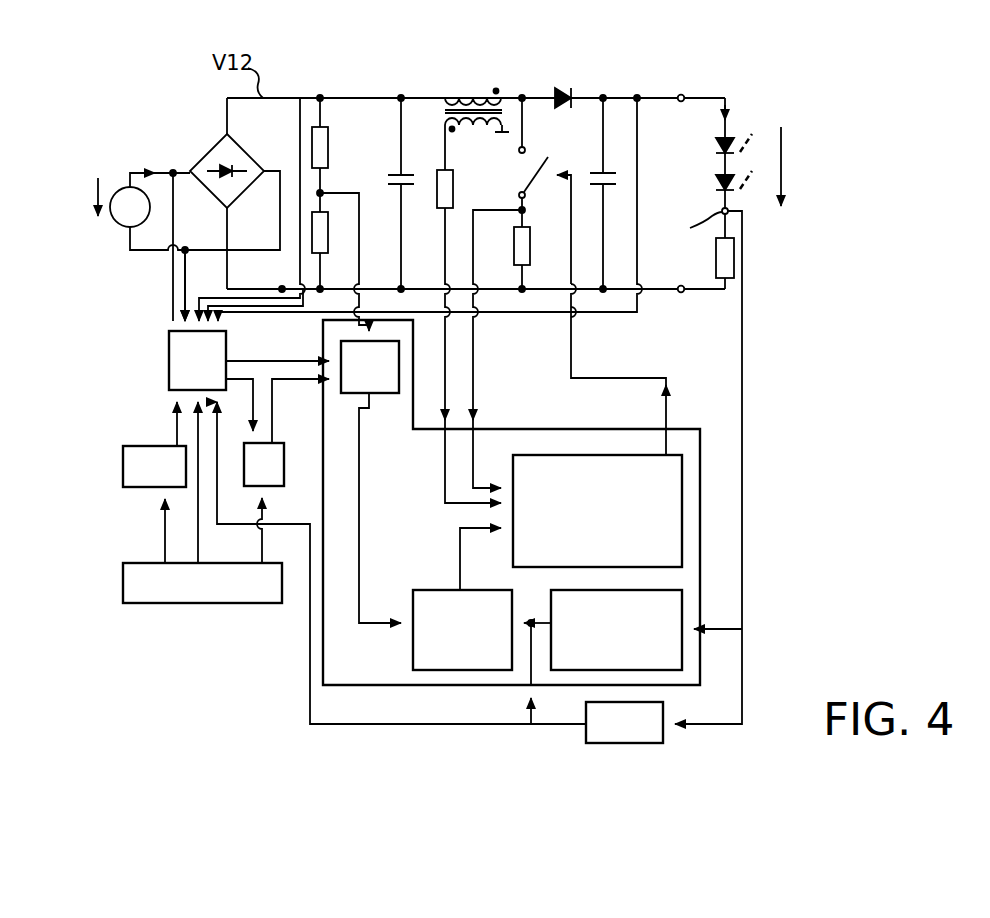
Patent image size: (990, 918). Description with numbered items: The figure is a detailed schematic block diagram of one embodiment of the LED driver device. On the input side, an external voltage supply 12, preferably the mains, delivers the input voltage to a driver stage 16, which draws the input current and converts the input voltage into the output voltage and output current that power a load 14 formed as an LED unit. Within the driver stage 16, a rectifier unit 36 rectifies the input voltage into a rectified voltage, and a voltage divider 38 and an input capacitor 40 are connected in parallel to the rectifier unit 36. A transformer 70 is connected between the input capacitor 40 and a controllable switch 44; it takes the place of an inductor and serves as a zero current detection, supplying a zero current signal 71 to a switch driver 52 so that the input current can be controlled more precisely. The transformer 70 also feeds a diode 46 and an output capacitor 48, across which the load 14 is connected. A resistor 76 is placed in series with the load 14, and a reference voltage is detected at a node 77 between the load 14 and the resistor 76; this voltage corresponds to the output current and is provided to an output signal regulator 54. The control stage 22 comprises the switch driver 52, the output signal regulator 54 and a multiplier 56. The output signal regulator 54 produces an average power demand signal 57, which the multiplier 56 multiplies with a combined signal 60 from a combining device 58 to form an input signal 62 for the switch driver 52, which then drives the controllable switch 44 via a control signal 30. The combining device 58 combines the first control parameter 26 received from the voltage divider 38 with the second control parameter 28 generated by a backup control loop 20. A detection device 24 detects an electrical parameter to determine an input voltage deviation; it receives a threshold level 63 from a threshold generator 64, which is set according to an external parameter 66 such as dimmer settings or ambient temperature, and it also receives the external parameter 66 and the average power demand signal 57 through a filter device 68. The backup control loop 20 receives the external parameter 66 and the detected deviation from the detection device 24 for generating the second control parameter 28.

The external voltage supply 12 is at (118, 195).
The load 14 is at (764, 100).
The driver stage 16 is at (192, 95).
The backup control loop 20 is at (270, 486).
The control stage 22 is at (536, 429).
The detection device 24 is at (169, 360).
The first control parameter 26 is at (359, 300).
The second control parameter 28 is at (272, 408).
The control signal 30 is at (668, 396).
The rectifier unit 36 is at (206, 155).
The voltage divider 38 is at (332, 153).
The input capacitor 40 is at (401, 173).
The controllable switch 44 is at (525, 180).
The diode 46 is at (560, 90).
The output capacitor 48 is at (605, 188).
The switch driver 52 is at (682, 518).
The output signal regulator 54 is at (682, 603).
The multiplier 56 is at (412, 592).
The average power demand signal 57 is at (480, 725).
The combining device 58 is at (346, 394).
The combined signal 60 is at (359, 470).
The input signal 62 is at (460, 570).
The threshold level 63 is at (177, 418).
The threshold generator 64 is at (123, 465).
The external parameter 66 is at (125, 575).
The filter device 68 is at (663, 742).
The transformer 70 is at (455, 104).
The zero current signal 71 is at (444, 400).
The resistor 76 is at (716, 255).
The node 77 is at (722, 210).